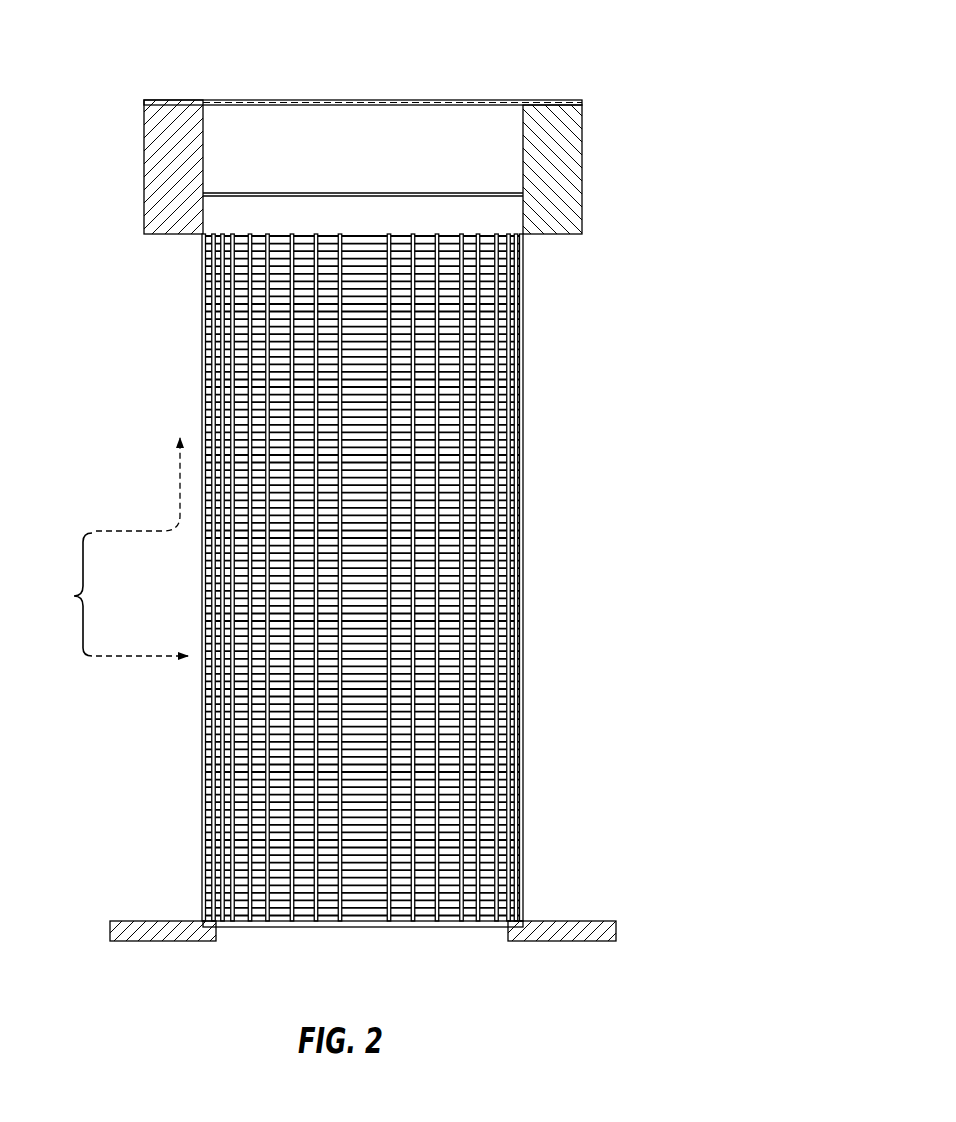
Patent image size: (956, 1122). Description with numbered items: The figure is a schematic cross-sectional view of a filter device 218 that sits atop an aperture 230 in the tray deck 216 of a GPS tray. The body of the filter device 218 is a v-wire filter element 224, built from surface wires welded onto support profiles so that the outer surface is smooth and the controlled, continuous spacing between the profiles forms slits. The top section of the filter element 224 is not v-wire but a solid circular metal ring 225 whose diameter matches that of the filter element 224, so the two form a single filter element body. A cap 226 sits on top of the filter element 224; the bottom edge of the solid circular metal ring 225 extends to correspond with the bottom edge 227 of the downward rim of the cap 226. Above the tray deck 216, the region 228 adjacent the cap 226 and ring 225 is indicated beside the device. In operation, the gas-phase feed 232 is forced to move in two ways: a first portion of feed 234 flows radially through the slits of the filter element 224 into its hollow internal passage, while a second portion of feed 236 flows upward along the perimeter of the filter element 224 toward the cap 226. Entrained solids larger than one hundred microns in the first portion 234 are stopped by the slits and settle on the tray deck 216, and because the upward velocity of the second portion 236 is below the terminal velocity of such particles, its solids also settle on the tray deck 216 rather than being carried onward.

The tray deck 216 is at (157, 912).
The filter device 218 is at (500, 50).
The v-wire filter element 224 is at (85, 370).
The solid circular metal ring 225 is at (502, 212).
The cap 226 is at (208, 92).
The bottom edge of the downward rim of the cap 227 is at (243, 223).
The header side wall 228 is at (545, 232).
The aperture 230 is at (262, 936).
The gas-phase feed 232 is at (61, 594).
The first portion of feed 234 is at (121, 650).
The second portion of feed 236 is at (121, 522).